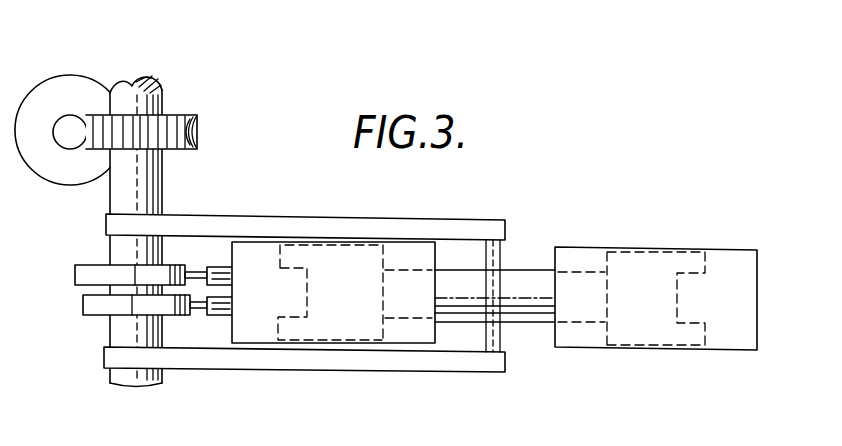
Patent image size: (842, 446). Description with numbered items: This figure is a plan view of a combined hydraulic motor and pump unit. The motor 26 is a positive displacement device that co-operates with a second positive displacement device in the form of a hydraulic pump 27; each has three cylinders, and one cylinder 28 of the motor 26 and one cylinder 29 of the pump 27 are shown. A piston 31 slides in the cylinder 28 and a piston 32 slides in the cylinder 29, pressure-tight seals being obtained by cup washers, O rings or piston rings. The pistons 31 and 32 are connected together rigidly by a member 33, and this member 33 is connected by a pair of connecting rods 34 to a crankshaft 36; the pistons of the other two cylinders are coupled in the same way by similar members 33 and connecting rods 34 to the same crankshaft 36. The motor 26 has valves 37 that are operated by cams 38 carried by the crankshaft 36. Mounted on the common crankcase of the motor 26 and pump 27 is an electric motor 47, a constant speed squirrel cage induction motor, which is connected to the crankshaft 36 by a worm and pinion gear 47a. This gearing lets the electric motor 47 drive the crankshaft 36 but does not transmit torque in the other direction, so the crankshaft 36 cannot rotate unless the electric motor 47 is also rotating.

The motor 26 is at (333, 297).
The hydraulic pump 27 is at (656, 302).
The cylinder 28 is at (268, 343).
The cylinder 29 is at (728, 352).
The piston 31 is at (347, 330).
The piston 32 is at (647, 340).
The member 33 is at (512, 277).
The connecting rods 34 is at (462, 228).
The crankshaft 36 is at (115, 382).
The valves 37 is at (193, 275).
The cams 38 is at (75, 272).
The electric motor 47 is at (60, 92).
The worm and pinion gear 47a is at (90, 106).